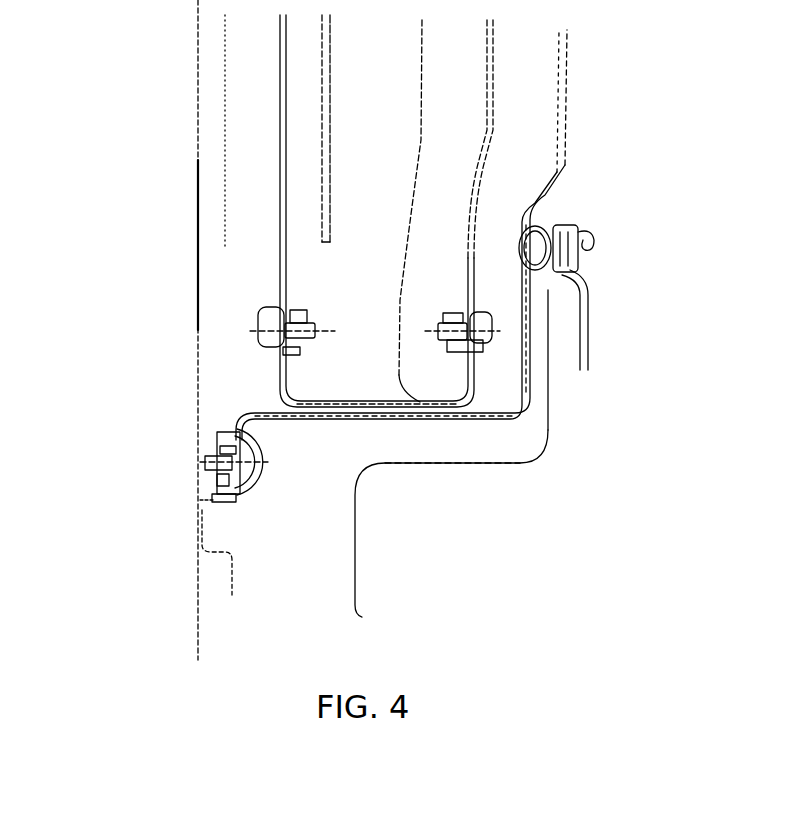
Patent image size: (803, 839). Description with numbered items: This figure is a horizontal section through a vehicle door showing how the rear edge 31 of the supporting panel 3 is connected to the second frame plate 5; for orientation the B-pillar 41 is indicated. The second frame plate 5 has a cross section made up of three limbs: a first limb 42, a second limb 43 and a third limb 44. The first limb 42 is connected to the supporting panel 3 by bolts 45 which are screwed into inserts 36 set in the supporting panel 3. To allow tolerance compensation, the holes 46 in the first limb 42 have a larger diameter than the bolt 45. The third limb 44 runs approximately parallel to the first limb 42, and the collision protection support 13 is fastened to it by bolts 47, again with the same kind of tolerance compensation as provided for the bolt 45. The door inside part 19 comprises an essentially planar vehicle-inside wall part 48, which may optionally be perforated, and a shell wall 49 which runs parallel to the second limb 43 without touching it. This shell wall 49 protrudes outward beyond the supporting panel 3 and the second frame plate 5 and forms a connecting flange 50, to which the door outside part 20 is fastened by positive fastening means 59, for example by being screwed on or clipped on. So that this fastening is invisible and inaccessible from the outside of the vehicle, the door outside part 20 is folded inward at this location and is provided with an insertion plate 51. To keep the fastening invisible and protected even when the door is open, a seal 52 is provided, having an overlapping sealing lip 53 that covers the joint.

The supporting panel 3 is at (422, 78).
The collision protection support 13 is at (272, 116).
The first limb 42 is at (470, 259).
The inserts 36 is at (453, 317).
The bolts 47 is at (300, 332).
The rear edge 31 is at (399, 379).
The third limb 44 is at (288, 359).
The second limb 43 is at (329, 404).
The shell wall 49 is at (366, 414).
The connecting flange 50 is at (230, 440).
The sealing lip 53 is at (258, 462).
The positive fastening means 59 is at (231, 467).
The insertion plate 51 is at (222, 480).
The door outside part 20 is at (196, 501).
The seal 52 is at (221, 502).
The vehicle-inside wall part 48 is at (550, 193).
The bolts 45 is at (455, 330).
The holes 46 is at (470, 342).
The second frame plate 5 is at (458, 393).
The door inside part 19 is at (518, 406).
The B-pillar 41 is at (451, 523).